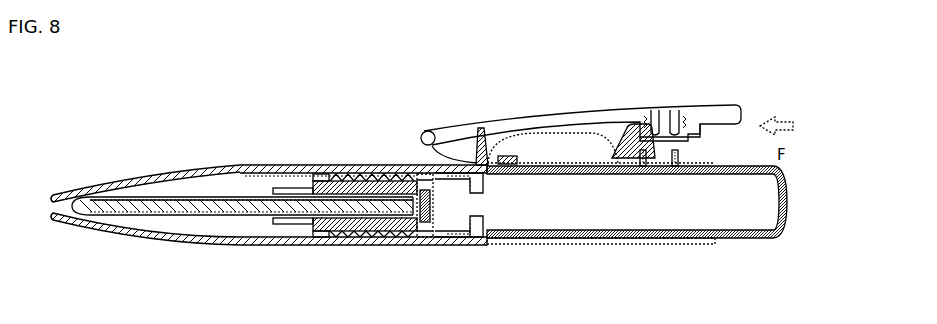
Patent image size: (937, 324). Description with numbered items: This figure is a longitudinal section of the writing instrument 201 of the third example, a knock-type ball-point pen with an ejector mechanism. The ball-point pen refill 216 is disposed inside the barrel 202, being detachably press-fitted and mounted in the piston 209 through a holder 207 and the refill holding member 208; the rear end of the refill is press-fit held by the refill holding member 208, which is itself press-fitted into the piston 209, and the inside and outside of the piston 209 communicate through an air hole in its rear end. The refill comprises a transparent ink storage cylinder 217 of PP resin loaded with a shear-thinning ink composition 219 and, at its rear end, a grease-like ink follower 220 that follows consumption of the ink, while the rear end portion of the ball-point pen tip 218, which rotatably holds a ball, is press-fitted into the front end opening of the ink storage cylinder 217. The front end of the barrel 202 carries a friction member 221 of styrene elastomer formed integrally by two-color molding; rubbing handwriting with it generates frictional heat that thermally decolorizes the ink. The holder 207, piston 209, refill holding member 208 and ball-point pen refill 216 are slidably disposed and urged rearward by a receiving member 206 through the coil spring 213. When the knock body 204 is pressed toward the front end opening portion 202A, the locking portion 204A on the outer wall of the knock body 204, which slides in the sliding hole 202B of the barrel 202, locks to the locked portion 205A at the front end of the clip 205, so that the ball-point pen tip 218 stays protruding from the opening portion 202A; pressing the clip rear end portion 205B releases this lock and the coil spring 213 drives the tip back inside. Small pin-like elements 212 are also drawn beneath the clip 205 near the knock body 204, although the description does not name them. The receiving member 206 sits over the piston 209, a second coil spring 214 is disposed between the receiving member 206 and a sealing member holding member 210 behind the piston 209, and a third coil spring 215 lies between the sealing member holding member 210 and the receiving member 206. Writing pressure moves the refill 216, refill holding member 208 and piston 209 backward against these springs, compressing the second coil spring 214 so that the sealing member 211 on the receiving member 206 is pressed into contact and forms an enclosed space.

The writing instrument 201 is at (228, 165).
The barrel 202 is at (202, 166).
The front end opening portion 202A is at (48, 202).
The sliding hole 202B is at (493, 167).
The knock body 204 is at (737, 237).
The locking portion 204A is at (513, 158).
The clip 205 is at (448, 130).
The locked portion 205A is at (424, 140).
The clip rear end portion 205B is at (700, 108).
The receiving member 206 is at (413, 242).
The holder 207 is at (302, 225).
The refill holding member 208 is at (375, 243).
The piston 209 is at (331, 176).
The sealing member holding member 210 is at (428, 242).
The sealing member 211 is at (445, 243).
The pins 212 is at (646, 158).
The coil spring 213 is at (248, 242).
The second coil spring 214 is at (375, 181).
The third coil spring 215 is at (477, 242).
The ball-point pen refill 216 is at (213, 205).
The ink storage cylinder 217 is at (163, 214).
The ball-point pen tip 218 is at (72, 219).
The ink composition 219 is at (235, 213).
The ink follower 220 is at (333, 240).
The friction member 221 is at (63, 193).